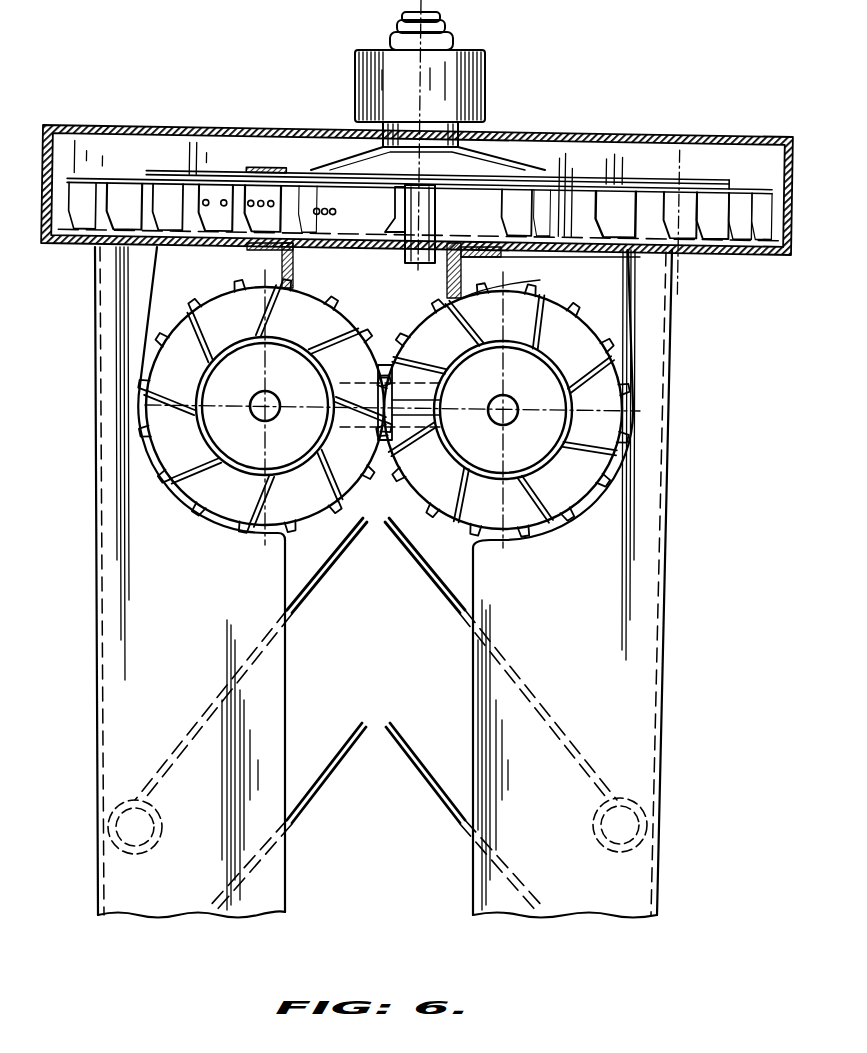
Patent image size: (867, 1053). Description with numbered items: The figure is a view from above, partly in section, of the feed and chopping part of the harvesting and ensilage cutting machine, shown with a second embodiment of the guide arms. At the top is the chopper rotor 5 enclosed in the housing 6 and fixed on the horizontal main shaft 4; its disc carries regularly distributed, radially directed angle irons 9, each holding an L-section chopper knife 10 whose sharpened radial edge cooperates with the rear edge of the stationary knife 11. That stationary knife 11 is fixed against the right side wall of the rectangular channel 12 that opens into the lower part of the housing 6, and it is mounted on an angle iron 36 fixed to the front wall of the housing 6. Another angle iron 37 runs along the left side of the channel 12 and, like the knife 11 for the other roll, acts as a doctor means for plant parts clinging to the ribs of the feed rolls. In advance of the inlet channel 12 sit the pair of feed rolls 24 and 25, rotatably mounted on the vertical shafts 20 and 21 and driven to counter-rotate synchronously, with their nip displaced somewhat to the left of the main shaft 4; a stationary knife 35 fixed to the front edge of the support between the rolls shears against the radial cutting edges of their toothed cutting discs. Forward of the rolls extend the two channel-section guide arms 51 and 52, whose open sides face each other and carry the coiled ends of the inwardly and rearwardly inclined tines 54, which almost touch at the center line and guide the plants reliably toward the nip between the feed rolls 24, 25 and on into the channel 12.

The main shaft 4 is at (408, 262).
The chopper rotor 5 is at (613, 168).
The housing 6 is at (740, 255).
The angle irons 9 is at (455, 200).
The chopper knife 10 is at (396, 224).
The stationary knife 11 is at (445, 290).
The rectangular channel 12 is at (316, 247).
The vertical shaft 20 is at (276, 406).
The vertical shaft 21 is at (510, 418).
The feed roll 24 is at (297, 497).
The feed roll 25 is at (490, 505).
The stationary knife 35 is at (380, 440).
The angle iron 36 is at (470, 283).
The angle iron 37 is at (280, 257).
The guide arm 51 is at (250, 692).
The guide arm 52 is at (495, 698).
The tines 54 is at (307, 596).